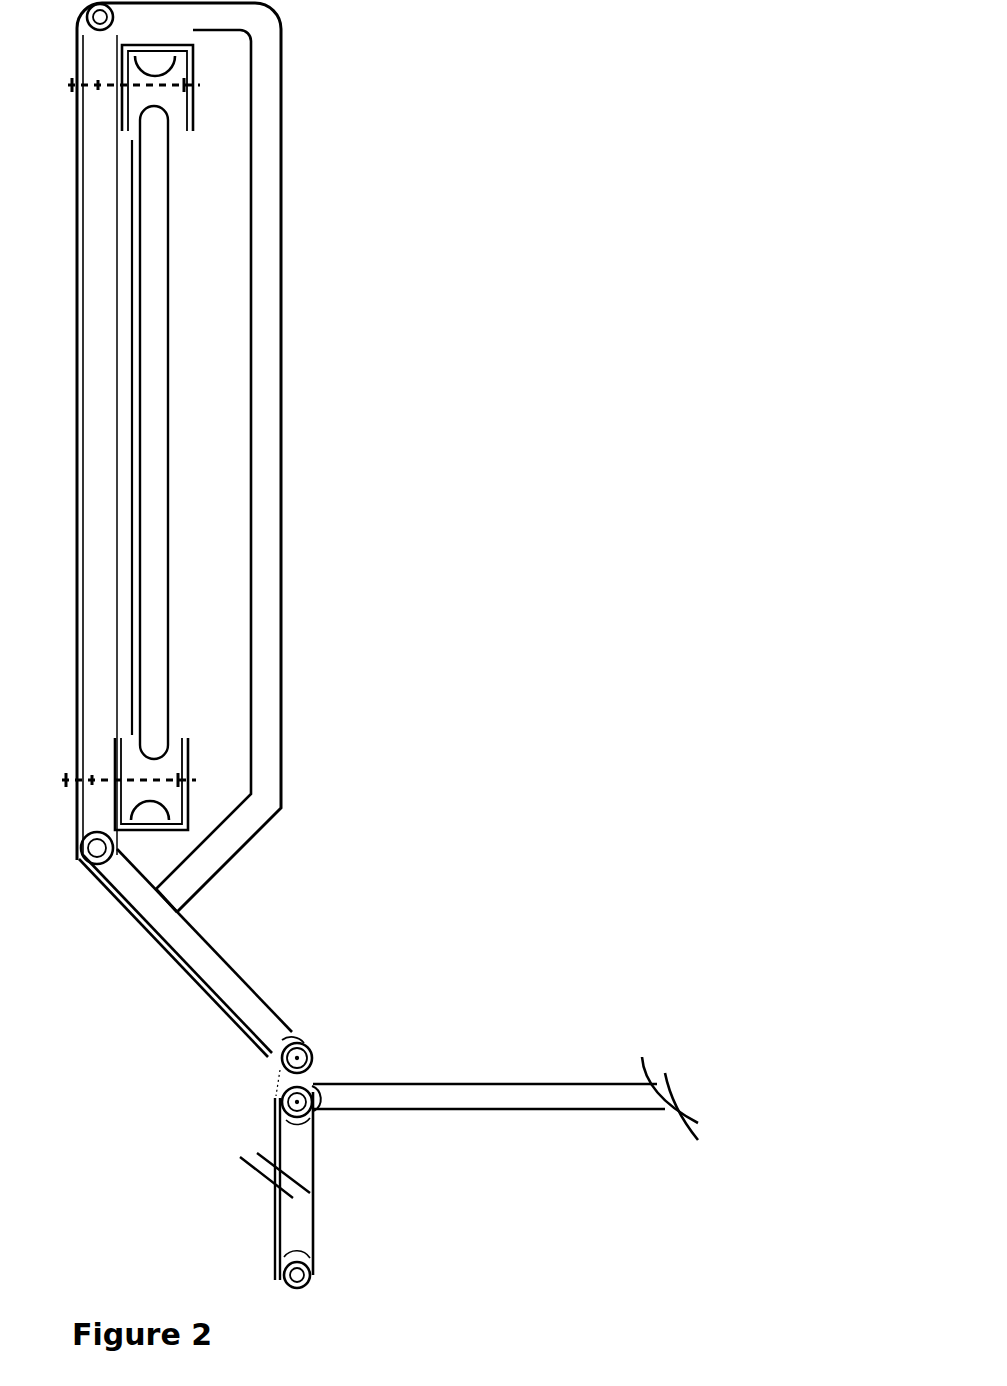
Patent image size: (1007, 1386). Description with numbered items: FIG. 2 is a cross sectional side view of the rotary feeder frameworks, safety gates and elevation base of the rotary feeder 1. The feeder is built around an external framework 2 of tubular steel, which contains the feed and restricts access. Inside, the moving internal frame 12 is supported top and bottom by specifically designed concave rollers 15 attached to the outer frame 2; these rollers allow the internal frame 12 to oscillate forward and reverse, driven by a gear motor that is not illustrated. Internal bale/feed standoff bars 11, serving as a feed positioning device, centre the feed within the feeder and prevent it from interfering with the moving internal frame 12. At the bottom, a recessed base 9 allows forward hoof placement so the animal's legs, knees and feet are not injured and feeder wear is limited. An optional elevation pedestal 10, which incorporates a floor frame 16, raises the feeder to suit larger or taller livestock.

The positioning device 1 is at (614, 117).
The external framework 2 is at (117, 410).
The recessed base 9 is at (312, 1045).
The elevation pedestal 10 is at (317, 1202).
The bale/feed standoff bar 11 is at (283, 182).
The internal frame 12 is at (175, 278).
The concave roller 15 is at (197, 82).
The floor frame 16 is at (502, 1083).